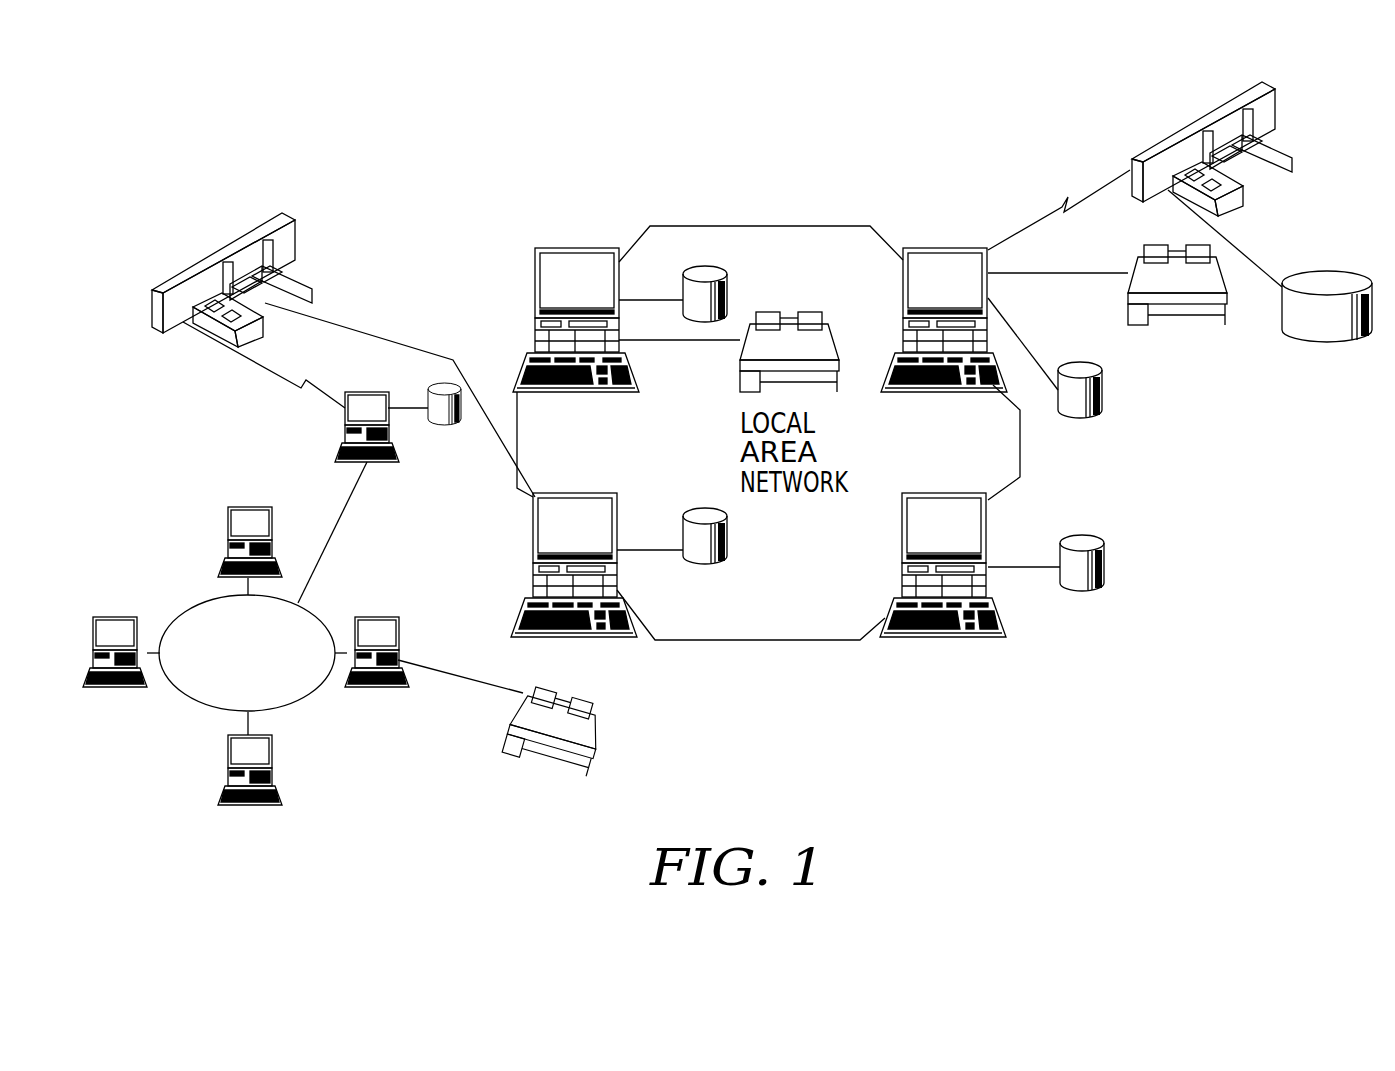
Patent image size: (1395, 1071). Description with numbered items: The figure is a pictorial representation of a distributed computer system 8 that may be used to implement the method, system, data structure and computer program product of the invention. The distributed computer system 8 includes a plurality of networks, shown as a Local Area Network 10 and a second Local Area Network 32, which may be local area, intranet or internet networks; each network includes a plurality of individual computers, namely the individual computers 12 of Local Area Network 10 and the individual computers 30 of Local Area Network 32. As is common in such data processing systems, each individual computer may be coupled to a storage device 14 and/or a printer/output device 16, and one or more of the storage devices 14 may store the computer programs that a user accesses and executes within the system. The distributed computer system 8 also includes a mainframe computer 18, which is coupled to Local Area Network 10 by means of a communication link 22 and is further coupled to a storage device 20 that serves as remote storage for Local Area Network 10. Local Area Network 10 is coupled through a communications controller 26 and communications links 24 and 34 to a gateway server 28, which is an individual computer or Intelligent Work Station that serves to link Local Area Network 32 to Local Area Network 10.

The distributed computer system 8 is at (768, 205).
The Local Area Network 10 is at (725, 640).
The individual computer 12 is at (581, 248).
The storage device 14 is at (727, 292).
The printer/output device 16 is at (798, 316).
The mainframe computer 18 is at (1220, 110).
The storage device 20 is at (1352, 270).
The communication link 22 is at (1092, 190).
The communications link 24 is at (371, 334).
The communications controller 26 is at (294, 216).
The gateway server 28 is at (368, 392).
The individual computer 30 is at (250, 507).
The Local Area Network 32 is at (190, 701).
The communications link 34 is at (276, 378).